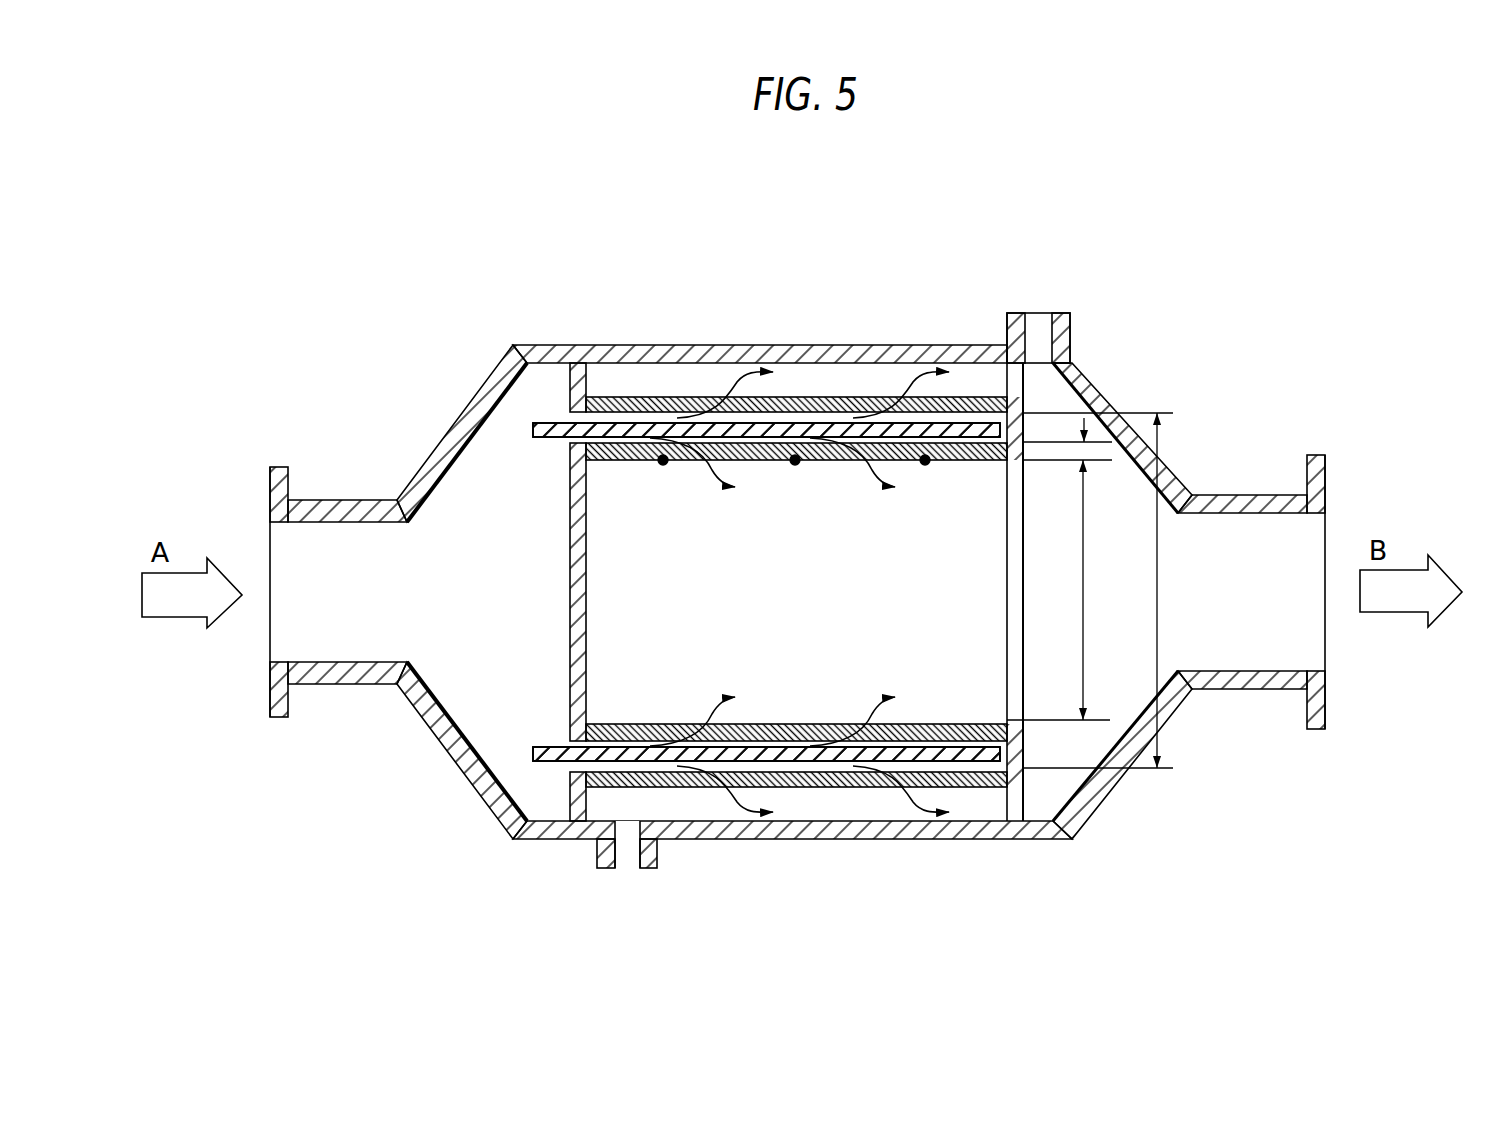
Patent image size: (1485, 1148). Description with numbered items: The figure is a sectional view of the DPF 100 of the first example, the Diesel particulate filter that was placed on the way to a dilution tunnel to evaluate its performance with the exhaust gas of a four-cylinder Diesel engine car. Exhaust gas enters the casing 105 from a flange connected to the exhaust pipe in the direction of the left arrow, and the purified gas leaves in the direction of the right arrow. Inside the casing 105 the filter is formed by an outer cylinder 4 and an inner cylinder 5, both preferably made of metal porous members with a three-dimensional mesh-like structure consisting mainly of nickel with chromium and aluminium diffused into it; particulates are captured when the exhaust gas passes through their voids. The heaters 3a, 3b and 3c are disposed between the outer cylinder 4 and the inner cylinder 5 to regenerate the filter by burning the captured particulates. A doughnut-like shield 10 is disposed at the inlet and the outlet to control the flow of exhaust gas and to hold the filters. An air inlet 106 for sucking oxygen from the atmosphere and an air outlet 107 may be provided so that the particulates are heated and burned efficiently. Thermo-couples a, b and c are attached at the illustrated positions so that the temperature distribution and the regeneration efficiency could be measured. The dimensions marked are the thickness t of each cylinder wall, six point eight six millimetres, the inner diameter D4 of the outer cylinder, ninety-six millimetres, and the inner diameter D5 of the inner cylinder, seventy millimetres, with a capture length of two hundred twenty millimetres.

The DPF 100 is at (880, 342).
The casing 105 is at (727, 353).
The air inlet 106 is at (621, 868).
The air outlet 107 is at (1040, 313).
The doughnut-like shield 10 is at (1018, 757).
The inner cylinder 5 is at (580, 457).
The outer cylinder 4 is at (637, 406).
The heater 3a is at (538, 762).
The heater 3b is at (685, 668).
The heater 3c is at (685, 689).
The thermo-couple a is at (663, 479).
The thermo-couple b is at (795, 479).
The thermo-couple c is at (925, 479).
The thickness t is at (1087, 453).
The inner diameter of outer cylinder D4 is at (1099, 590).
The inner diameter of inner cylinder D5 is at (1058, 590).